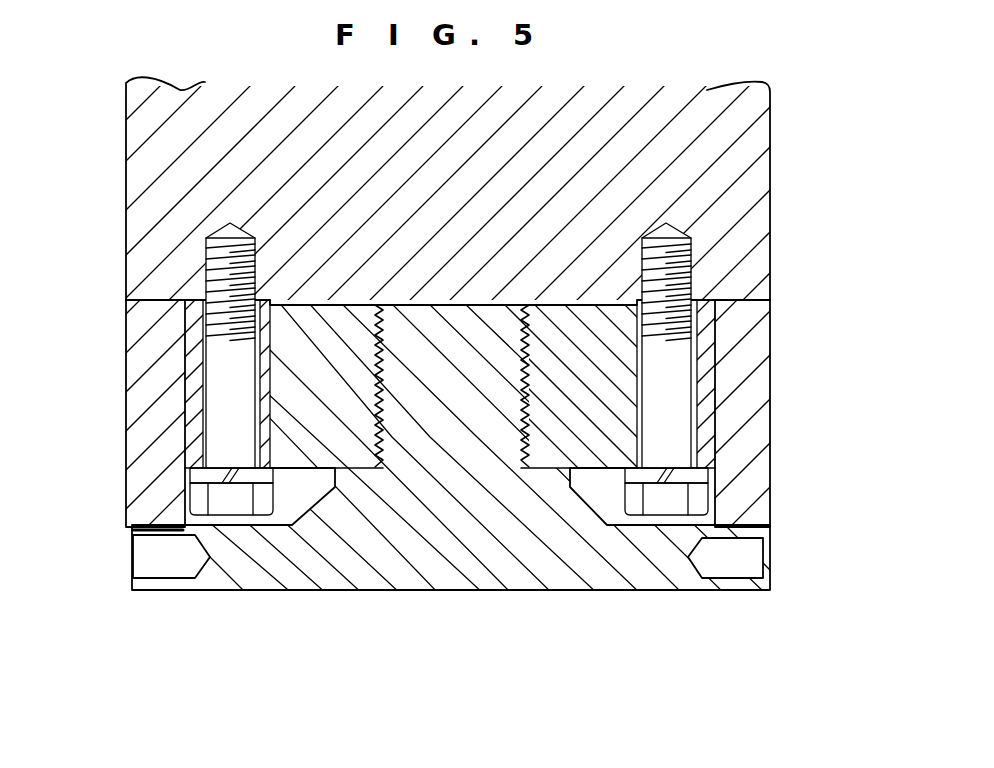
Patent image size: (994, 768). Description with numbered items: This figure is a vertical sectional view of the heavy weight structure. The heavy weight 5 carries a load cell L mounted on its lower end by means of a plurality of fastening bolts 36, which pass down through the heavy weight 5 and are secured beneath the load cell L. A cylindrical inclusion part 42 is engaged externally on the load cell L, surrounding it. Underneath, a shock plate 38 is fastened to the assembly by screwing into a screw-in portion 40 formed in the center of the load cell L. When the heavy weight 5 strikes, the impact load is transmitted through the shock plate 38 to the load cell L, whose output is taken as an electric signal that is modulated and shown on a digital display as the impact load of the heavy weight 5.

The heavy weight 5 is at (765, 133).
The fastening bolts 36 is at (225, 374).
The shock plate 38 is at (450, 548).
The screw-in portion 40 is at (352, 441).
The cylindrical inclusion part 42 is at (763, 435).
The load cell L is at (623, 407).